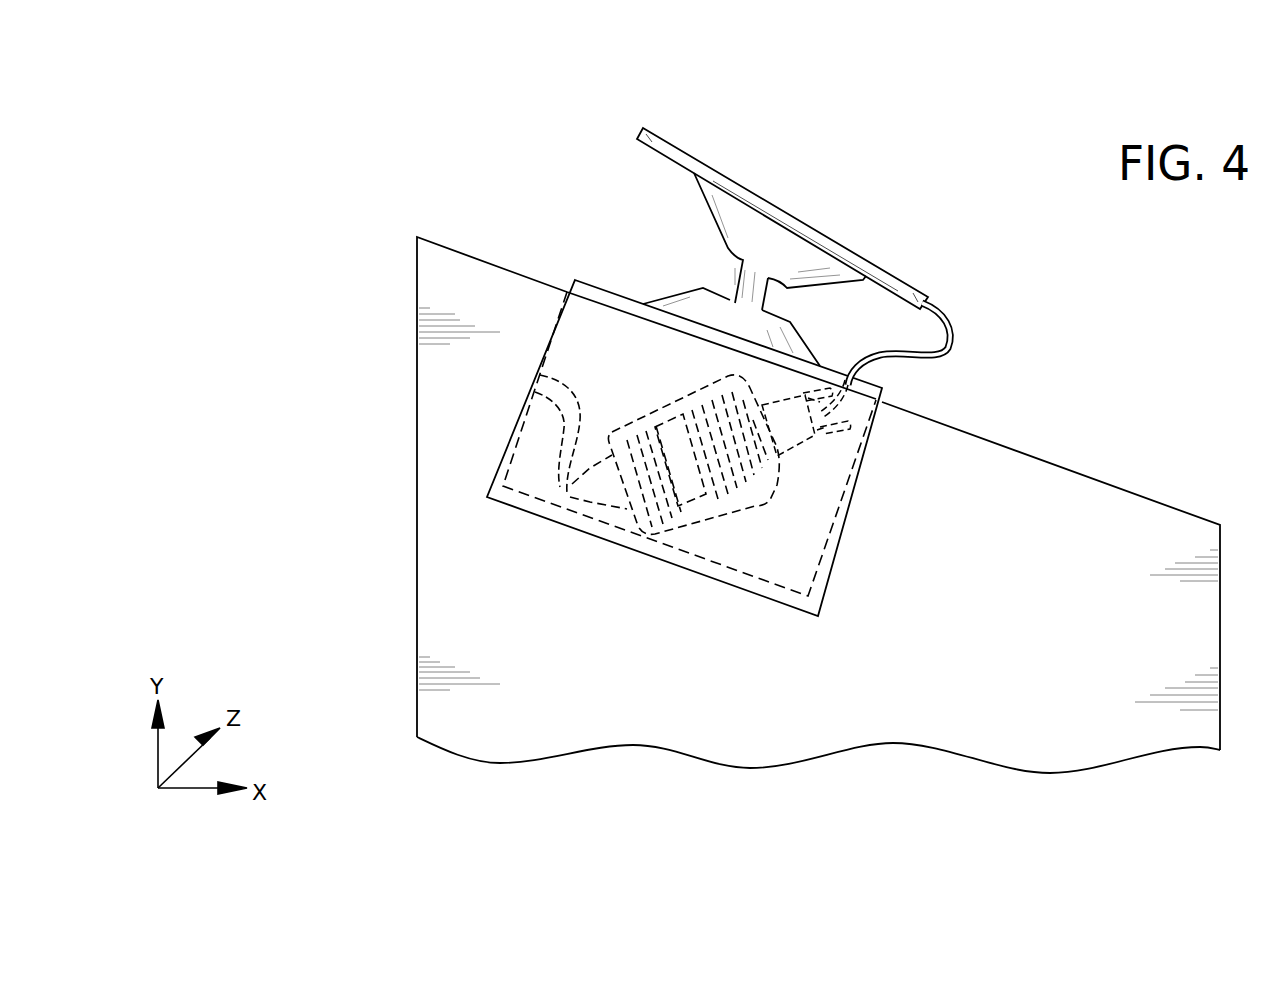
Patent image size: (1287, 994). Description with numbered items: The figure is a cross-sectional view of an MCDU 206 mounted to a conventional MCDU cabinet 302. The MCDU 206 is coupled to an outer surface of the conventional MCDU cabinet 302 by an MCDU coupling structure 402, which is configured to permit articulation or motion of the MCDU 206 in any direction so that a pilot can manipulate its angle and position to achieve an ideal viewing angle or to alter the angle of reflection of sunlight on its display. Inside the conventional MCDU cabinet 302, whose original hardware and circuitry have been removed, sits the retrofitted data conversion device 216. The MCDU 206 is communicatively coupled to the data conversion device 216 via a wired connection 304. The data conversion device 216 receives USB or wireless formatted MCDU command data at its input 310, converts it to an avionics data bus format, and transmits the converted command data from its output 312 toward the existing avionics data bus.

The MCDU 206 is at (660, 132).
The MCDU coupling structure 402 is at (738, 282).
The wired connection 304 is at (942, 353).
The conventional MCDU cabinet 302 is at (834, 562).
The input 310 is at (846, 421).
The output 312 is at (553, 518).
The data conversion device 216 is at (688, 522).